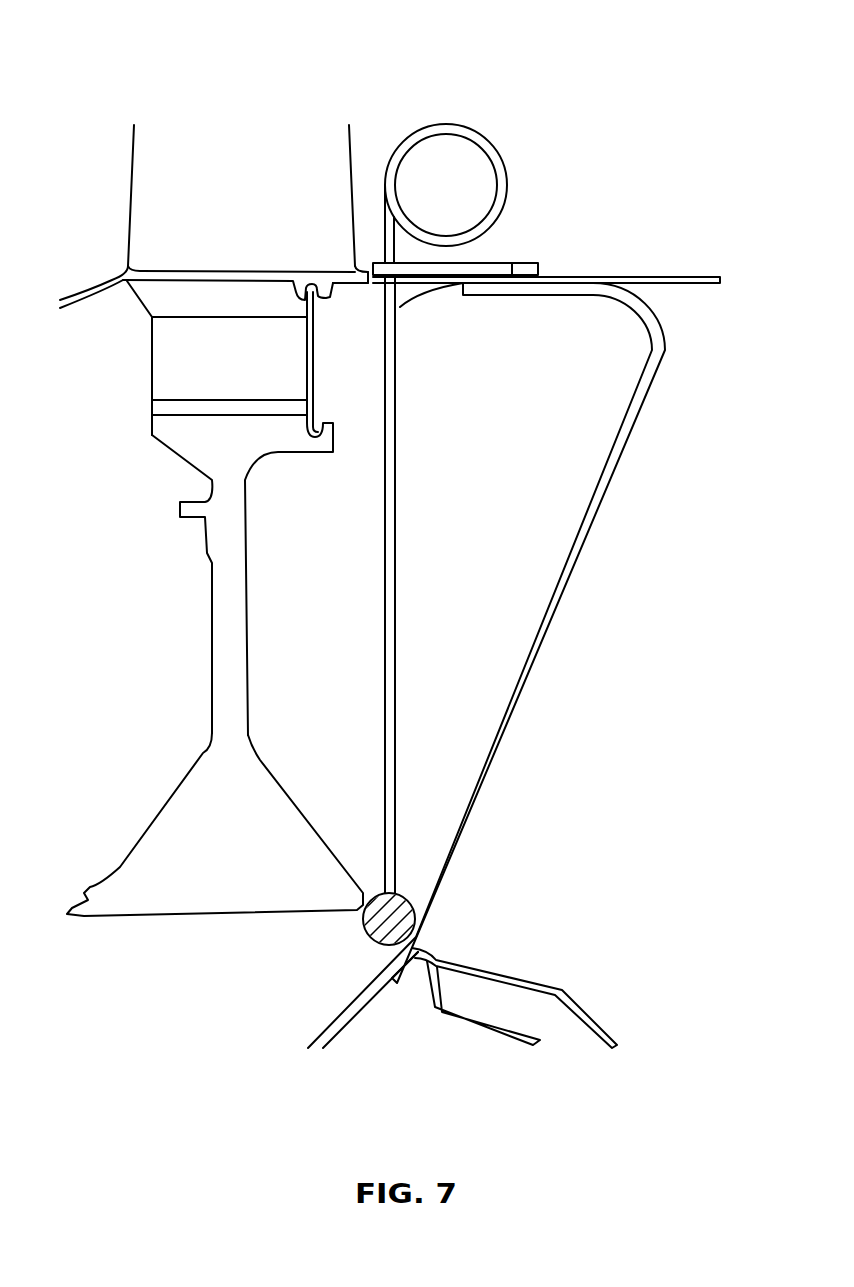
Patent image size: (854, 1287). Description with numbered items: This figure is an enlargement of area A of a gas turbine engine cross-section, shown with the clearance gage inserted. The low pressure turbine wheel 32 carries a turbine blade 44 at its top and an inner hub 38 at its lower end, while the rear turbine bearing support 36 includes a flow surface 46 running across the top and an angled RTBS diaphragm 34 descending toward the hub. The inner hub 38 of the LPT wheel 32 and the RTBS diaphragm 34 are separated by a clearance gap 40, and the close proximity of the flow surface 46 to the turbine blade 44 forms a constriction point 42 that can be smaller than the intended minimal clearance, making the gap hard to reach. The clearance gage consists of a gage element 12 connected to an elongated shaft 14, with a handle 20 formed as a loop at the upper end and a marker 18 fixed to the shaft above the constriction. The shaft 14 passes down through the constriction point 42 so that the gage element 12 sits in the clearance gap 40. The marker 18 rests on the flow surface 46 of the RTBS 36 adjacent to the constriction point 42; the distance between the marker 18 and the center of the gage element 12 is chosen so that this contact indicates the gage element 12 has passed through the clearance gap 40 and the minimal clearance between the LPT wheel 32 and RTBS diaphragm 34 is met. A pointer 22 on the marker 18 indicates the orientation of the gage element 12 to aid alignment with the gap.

The gage element 12 is at (383, 920).
The elongated shaft 14 is at (395, 480).
The marker 18 is at (462, 268).
The handle 20 is at (492, 158).
The pointer 22 is at (540, 254).
The low pressure turbine wheel 32 is at (186, 730).
The RTBS diaphragm 34 is at (487, 742).
The rear turbine bearing support 36 is at (596, 826).
The inner hub 38 is at (327, 887).
The clearance gap 40 is at (344, 947).
The constriction point 42 is at (377, 304).
The turbine blade 44 is at (258, 204).
The flow surface 46 is at (708, 274).
The area A is at (675, 96).